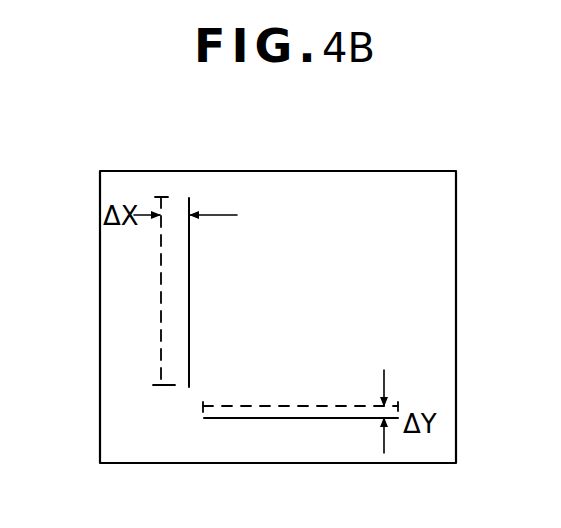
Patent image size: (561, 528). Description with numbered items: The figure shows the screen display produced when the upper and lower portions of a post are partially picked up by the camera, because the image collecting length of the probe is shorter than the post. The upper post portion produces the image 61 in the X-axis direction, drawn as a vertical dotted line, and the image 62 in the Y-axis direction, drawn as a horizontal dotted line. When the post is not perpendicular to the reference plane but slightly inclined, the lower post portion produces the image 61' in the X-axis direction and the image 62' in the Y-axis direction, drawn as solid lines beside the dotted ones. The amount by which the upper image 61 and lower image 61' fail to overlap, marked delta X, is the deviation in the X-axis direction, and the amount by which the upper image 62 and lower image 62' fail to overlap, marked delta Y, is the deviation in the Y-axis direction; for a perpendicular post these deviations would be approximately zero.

The image in the X-axis direction 61 is at (106, 291).
The image in the X-axis direction of the lower portion post 61' is at (235, 292).
The image in the Y-axis direction 62 is at (365, 352).
The image in the Y-axis direction of the lower portion post 62' is at (301, 462).